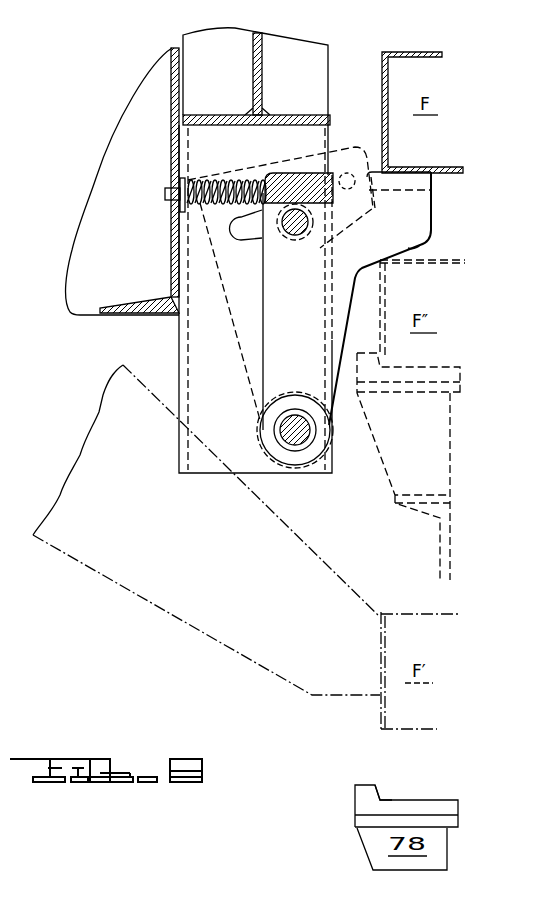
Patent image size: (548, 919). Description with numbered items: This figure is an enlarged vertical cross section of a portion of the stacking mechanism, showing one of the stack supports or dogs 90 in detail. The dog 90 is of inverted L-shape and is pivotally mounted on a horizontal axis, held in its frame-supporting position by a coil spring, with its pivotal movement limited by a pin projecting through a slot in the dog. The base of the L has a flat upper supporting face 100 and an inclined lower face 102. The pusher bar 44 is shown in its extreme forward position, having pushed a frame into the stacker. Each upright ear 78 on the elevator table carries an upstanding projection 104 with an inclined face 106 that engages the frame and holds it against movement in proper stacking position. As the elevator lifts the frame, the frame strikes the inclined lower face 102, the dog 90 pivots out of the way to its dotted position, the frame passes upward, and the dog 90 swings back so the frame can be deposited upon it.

The pusher bar 44 is at (206, 361).
The upright ear 78 is at (432, 452).
The stack support dog 90 is at (312, 336).
The flat upper supporting face 100 is at (367, 168).
The inclined lower face 102 is at (412, 248).
The upstanding projection 104 is at (360, 803).
The inclined face 106 is at (383, 800).